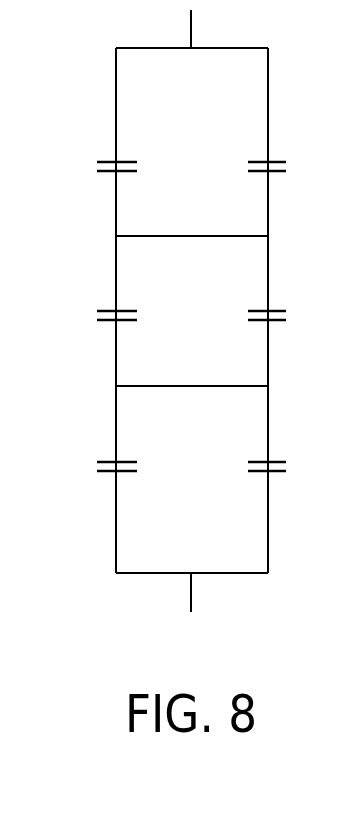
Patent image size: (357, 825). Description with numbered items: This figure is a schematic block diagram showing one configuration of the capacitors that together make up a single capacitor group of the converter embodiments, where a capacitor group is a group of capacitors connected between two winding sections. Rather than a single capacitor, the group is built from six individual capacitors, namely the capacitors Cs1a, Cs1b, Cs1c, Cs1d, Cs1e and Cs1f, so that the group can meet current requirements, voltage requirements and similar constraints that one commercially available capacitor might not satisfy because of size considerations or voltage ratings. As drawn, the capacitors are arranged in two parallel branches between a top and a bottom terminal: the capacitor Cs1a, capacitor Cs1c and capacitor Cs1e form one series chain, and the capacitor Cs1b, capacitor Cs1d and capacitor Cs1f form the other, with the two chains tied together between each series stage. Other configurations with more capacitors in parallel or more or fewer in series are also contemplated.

The capacitor Cs1a is at (92, 162).
The capacitor Cs1b is at (242, 162).
The capacitor Cs1c is at (92, 311).
The capacitor Cs1d is at (242, 311).
The capacitor Cs1e is at (92, 462).
The capacitor Cs1f is at (242, 462).